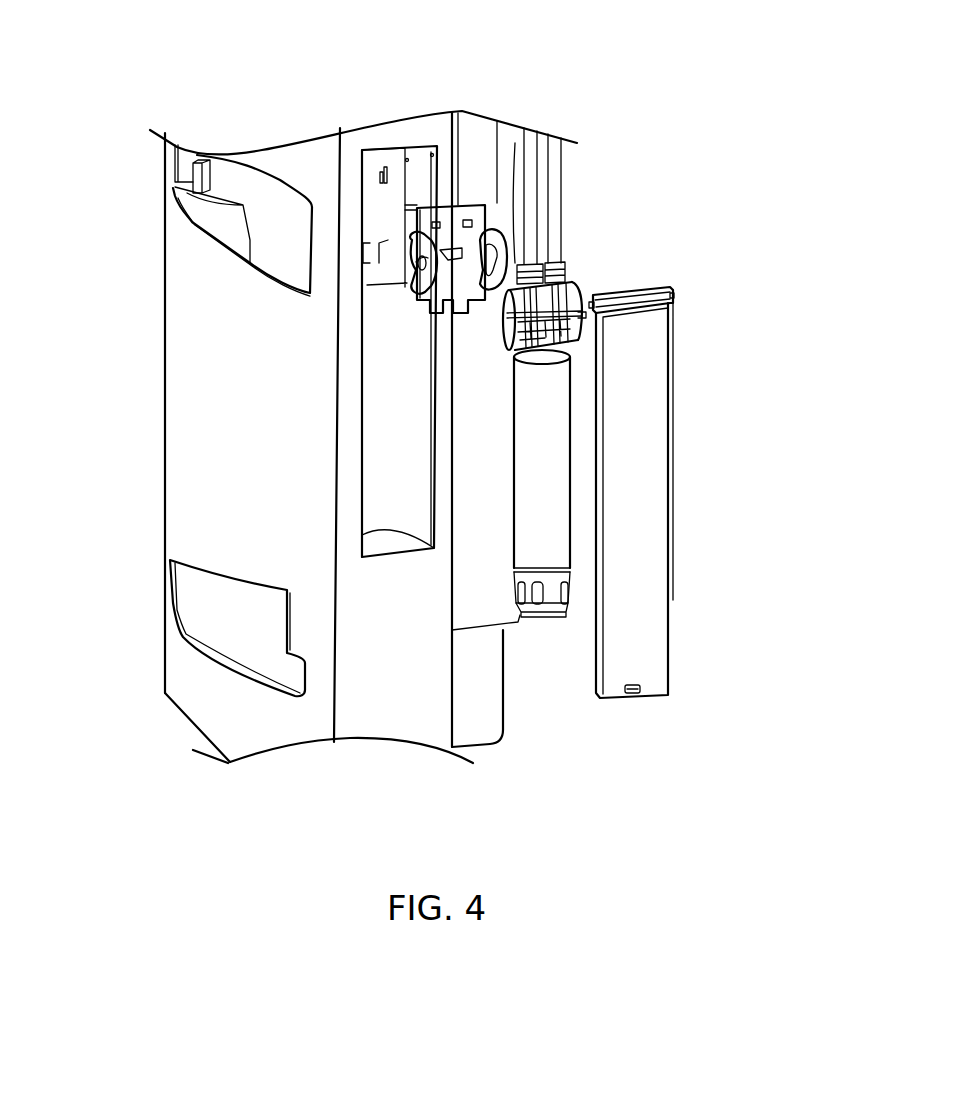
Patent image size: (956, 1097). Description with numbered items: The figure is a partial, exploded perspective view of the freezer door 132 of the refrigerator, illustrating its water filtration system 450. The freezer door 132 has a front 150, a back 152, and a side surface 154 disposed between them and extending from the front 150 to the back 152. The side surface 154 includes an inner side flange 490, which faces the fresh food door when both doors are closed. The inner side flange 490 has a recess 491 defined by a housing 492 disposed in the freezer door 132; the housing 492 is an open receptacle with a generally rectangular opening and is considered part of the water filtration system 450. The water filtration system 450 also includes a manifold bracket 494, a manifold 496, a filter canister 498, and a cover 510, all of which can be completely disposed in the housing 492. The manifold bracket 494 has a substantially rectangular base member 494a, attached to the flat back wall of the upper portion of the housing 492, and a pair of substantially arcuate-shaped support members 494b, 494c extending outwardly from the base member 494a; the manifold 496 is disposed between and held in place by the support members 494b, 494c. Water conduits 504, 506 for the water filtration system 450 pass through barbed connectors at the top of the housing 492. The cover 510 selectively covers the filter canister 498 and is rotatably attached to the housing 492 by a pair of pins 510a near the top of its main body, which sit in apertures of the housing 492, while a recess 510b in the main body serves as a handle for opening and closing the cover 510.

The water filtration system 450 is at (677, 67).
The freezer door 132 is at (190, 408).
The front 150 is at (253, 750).
The back 152 is at (450, 715).
The side surface 154 is at (362, 743).
The inner side flange 490 is at (391, 718).
The recess 491 is at (340, 524).
The housing 492 is at (380, 540).
The manifold bracket 494 is at (423, 186).
The base member 494a is at (445, 210).
The support member 494b is at (413, 280).
The support member 494c is at (497, 240).
The manifold 496 is at (573, 290).
The filter canister 498 is at (548, 553).
The water conduit 504 is at (532, 180).
The water conduit 506 is at (560, 224).
The cover 510 is at (668, 540).
The pins 510a is at (645, 307).
The recess 510b is at (640, 688).